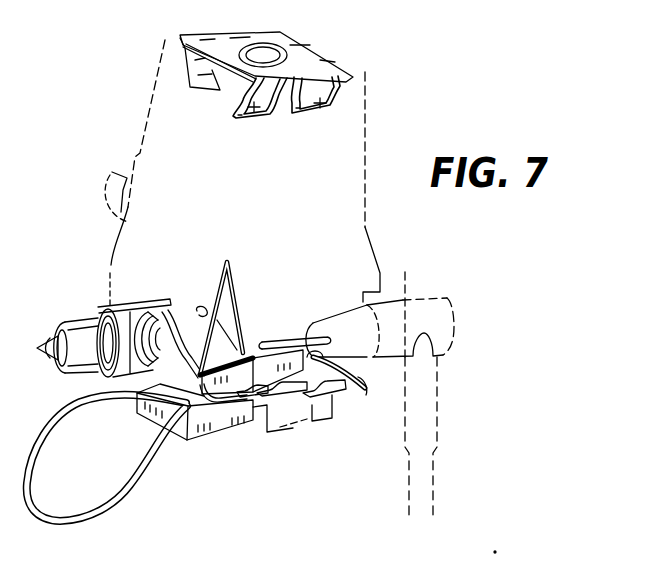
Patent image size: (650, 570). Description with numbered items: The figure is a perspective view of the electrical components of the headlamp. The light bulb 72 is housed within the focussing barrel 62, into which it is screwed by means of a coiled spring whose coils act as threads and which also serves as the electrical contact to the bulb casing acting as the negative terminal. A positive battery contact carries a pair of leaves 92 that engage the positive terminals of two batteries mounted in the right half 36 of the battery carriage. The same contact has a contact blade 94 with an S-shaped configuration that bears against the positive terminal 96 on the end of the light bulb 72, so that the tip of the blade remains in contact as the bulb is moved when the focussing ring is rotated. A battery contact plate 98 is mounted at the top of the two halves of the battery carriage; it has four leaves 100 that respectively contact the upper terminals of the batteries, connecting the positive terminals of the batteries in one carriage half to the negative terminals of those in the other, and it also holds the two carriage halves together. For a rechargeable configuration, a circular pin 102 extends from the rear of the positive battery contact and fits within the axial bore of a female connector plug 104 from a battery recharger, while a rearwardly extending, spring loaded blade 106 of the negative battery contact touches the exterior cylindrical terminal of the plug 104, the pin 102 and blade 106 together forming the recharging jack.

The right half of battery carriage 36 is at (347, 128).
The focussing barrel 62 is at (122, 303).
The light bulb 72 is at (73, 320).
The leaves 92 is at (267, 405).
The contact blade 94 is at (190, 328).
The positive terminal 96 is at (160, 313).
The battery contact plate 98 is at (300, 58).
The leaves 100 is at (320, 106).
The circular pin 102 is at (293, 338).
The female connector plug 104 is at (405, 272).
The spring loaded blade 106 is at (366, 390).